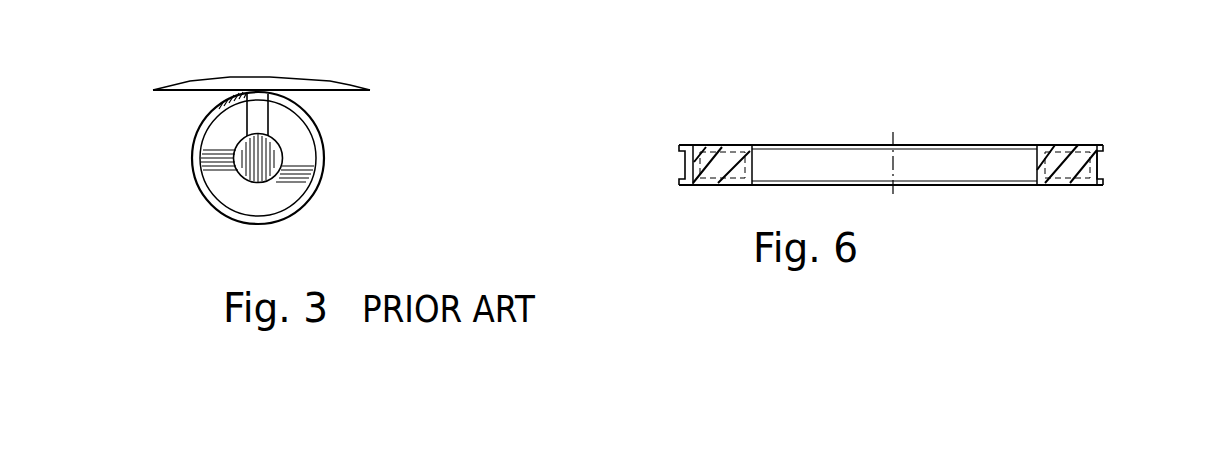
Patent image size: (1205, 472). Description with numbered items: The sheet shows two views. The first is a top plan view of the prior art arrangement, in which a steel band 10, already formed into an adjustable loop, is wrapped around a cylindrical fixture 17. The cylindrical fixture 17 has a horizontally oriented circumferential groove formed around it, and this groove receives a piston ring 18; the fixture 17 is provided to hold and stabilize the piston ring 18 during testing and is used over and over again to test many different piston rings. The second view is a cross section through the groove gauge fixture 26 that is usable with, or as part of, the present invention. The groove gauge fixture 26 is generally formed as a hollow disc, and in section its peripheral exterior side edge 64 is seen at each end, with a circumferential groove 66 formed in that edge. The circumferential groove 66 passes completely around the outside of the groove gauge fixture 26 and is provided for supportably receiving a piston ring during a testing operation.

In FIG. 3, the steel band 10 is at (344, 82).
In FIG. 3, the cylindrical fixture 17 is at (297, 188).
In FIG. 3, the piston ring 18 is at (250, 100).
In FIG. 6, the groove gauge fixture 26 is at (1036, 128).
In FIG. 6, the peripheral exterior side edge 64 is at (1103, 145).
In FIG. 6, the circumferential groove 66 is at (683, 178).